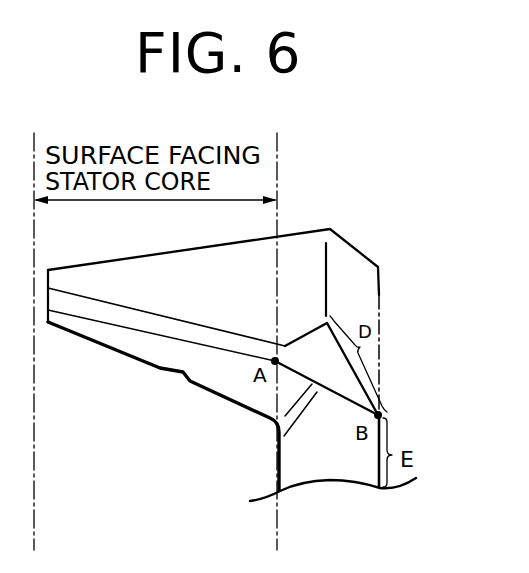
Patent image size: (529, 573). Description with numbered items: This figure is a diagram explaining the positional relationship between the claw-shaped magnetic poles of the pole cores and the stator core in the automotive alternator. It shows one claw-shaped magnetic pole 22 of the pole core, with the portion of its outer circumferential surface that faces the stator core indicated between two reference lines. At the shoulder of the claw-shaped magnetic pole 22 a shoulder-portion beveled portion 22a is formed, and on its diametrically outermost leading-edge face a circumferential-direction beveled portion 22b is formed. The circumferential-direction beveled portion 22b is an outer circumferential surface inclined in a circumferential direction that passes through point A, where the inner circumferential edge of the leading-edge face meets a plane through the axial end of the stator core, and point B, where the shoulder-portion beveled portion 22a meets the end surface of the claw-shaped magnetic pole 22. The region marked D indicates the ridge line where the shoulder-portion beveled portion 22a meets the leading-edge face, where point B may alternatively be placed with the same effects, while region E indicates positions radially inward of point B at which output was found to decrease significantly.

The claw-shaped magnetic pole 22 is at (388, 300).
The shoulder-portion beveled portion 22a is at (352, 270).
The circumferential-direction beveled portion 22b is at (348, 382).